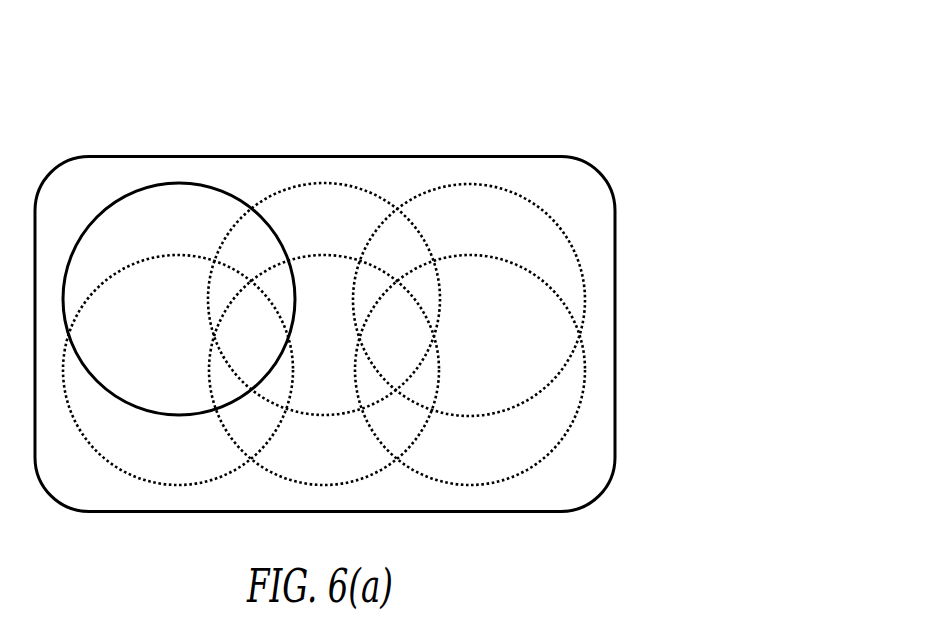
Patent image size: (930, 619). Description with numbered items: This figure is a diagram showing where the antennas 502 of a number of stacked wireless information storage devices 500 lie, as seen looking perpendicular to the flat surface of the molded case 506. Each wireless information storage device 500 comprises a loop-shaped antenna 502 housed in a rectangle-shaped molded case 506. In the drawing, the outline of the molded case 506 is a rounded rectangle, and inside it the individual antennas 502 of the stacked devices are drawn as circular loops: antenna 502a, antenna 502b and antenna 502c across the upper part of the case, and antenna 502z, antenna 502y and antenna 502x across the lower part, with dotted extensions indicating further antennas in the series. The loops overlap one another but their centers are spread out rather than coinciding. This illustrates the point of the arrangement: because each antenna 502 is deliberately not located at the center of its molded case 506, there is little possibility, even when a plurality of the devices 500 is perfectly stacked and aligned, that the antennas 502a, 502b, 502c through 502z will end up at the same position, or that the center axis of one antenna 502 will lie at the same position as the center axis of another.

The wireless information storage device 500 is at (382, 78).
The antenna 502 is at (246, 138).
The antenna 502a is at (180, 183).
The antenna 502b is at (324, 183).
The antenna 502c is at (560, 128).
The antenna 502x is at (567, 533).
The antenna 502y is at (325, 485).
The antenna 502z is at (177, 485).
The molded case 506 is at (605, 445).